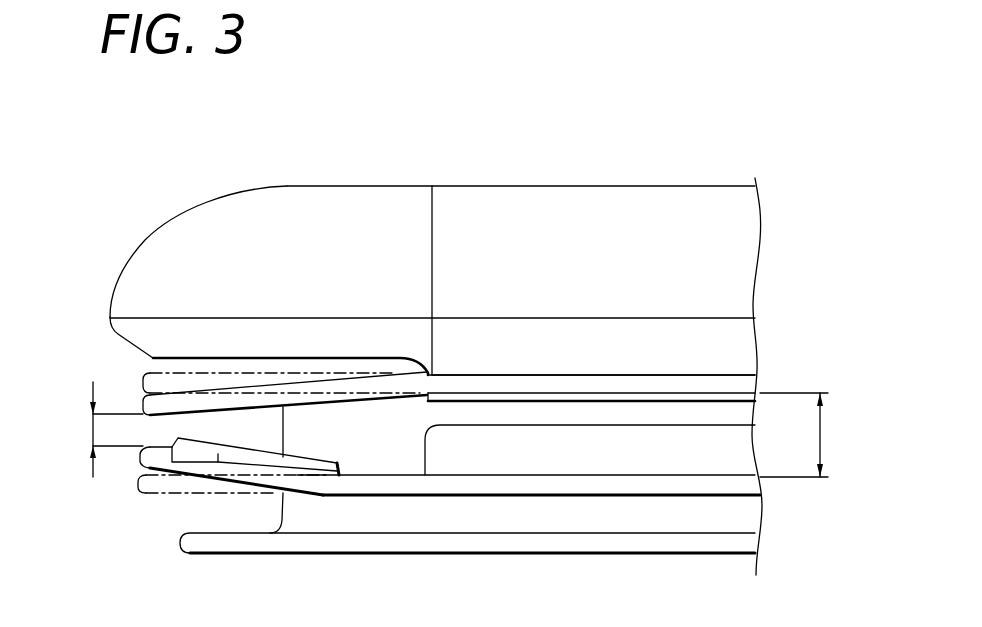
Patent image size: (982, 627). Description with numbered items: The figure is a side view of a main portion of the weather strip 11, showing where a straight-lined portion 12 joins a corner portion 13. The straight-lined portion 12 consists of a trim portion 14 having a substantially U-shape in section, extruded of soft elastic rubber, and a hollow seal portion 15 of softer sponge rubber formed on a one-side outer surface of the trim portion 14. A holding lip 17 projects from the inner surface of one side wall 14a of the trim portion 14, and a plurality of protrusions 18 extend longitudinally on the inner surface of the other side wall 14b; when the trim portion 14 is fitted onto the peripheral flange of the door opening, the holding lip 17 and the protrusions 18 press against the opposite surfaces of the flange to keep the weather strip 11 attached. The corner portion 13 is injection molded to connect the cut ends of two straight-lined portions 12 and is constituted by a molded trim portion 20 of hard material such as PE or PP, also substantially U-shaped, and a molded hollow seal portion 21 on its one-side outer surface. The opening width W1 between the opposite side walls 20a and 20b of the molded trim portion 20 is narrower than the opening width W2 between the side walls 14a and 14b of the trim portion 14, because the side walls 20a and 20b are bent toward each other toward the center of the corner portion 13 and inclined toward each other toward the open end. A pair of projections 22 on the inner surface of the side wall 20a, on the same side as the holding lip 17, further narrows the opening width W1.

The weather strip 11 is at (476, 122).
The straight-lined portion 12 is at (680, 207).
The corner portion 13 is at (240, 207).
The trim portion 14 is at (514, 485).
The one side wall 14a is at (740, 487).
The other side wall 14b is at (717, 383).
The hollow seal portion 15 is at (579, 207).
The holding lip 17 is at (606, 468).
The protrusions 18 is at (668, 398).
The molded trim portion 20 is at (370, 487).
The one side wall 20a is at (140, 457).
The other side wall 20b is at (142, 405).
The molded hollow seal portion 21 is at (348, 207).
The projections 22 is at (267, 452).
The opening width W1 is at (95, 429).
The opening width W2 is at (812, 435).